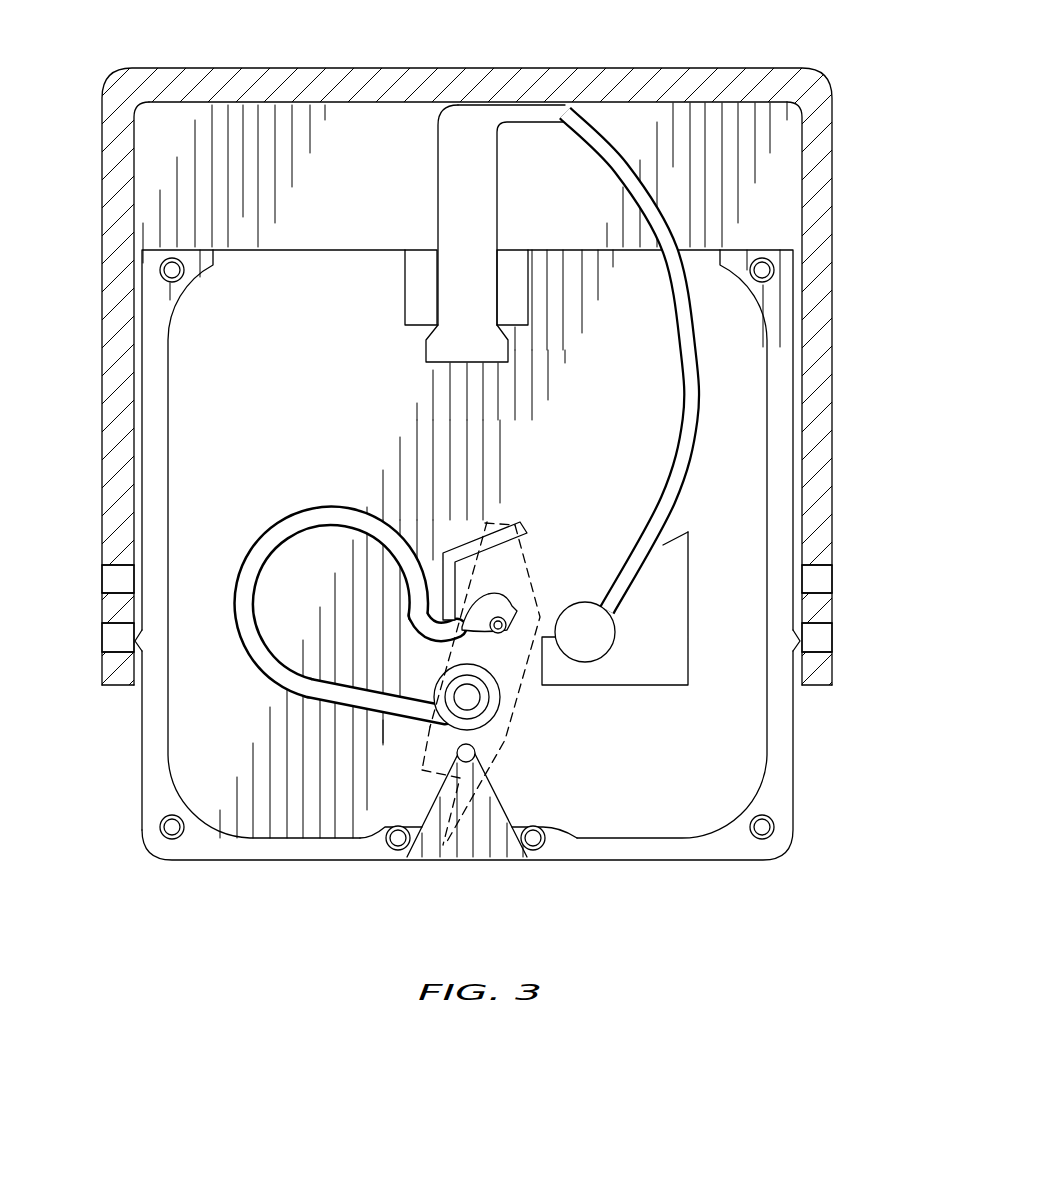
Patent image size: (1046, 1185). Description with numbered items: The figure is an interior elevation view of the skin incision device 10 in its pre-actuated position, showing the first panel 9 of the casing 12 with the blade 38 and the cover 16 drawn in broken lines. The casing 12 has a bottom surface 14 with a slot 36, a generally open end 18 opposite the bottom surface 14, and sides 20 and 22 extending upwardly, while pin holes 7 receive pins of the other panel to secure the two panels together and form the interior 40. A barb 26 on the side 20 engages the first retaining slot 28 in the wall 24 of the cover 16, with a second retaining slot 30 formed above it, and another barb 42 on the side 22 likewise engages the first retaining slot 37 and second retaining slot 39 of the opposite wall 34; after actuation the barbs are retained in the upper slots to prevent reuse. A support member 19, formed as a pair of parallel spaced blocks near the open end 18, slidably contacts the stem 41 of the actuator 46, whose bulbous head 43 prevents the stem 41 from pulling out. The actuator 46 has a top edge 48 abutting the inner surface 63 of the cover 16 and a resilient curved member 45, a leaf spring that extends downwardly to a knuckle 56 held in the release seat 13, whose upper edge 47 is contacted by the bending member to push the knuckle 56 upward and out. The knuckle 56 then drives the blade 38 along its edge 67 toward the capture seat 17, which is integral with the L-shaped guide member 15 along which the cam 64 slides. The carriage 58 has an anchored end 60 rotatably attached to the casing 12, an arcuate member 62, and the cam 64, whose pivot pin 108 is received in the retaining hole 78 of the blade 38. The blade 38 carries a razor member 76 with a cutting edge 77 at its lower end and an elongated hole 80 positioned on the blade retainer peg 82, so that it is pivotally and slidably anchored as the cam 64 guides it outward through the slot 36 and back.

The pin holes 7 is at (170, 831).
The first panel 9 is at (757, 789).
The skin incision device 10 is at (692, 38).
The casing 12 is at (730, 249).
The release seat 13 is at (620, 683).
The bottom surface 14 is at (677, 861).
The guide member 15 is at (445, 622).
The cover 16 is at (828, 182).
The capture seat 17 is at (522, 521).
The open end 18 is at (205, 249).
The support member 19 is at (410, 298).
The side 20 is at (780, 604).
The side 22 is at (170, 438).
The wall 24 is at (833, 367).
The barb 26 is at (790, 646).
The first retaining slot 28 is at (830, 640).
The second retaining slot 30 is at (830, 580).
The wall 34 is at (103, 384).
The slot 36 is at (432, 854).
The first retaining slot 37 is at (107, 641).
The blade 38 is at (498, 752).
The second retaining slot 39 is at (106, 578).
The interior 40 is at (332, 454).
The stem 41 is at (486, 195).
The barb 42 is at (139, 642).
The bulbous head 43 is at (500, 357).
The resilient curved member 45 is at (620, 168).
The actuator 46 is at (440, 209).
The upper edge 47 is at (690, 543).
The top edge 48 is at (517, 108).
The knuckle 56 is at (597, 638).
The carriage 58 is at (262, 540).
The anchored end 60 is at (440, 688).
The arcuate member 62 is at (265, 686).
The inner surface 63 is at (415, 104).
The cam 64 is at (506, 592).
The edge 67 is at (518, 552).
The razor member 76 is at (458, 834).
The cutting edge 77 is at (475, 813).
The retaining hole 78 is at (505, 617).
The elongated hole 80 is at (477, 744).
The blade retainer peg 82 is at (457, 755).
The pivot pin 108 is at (500, 634).